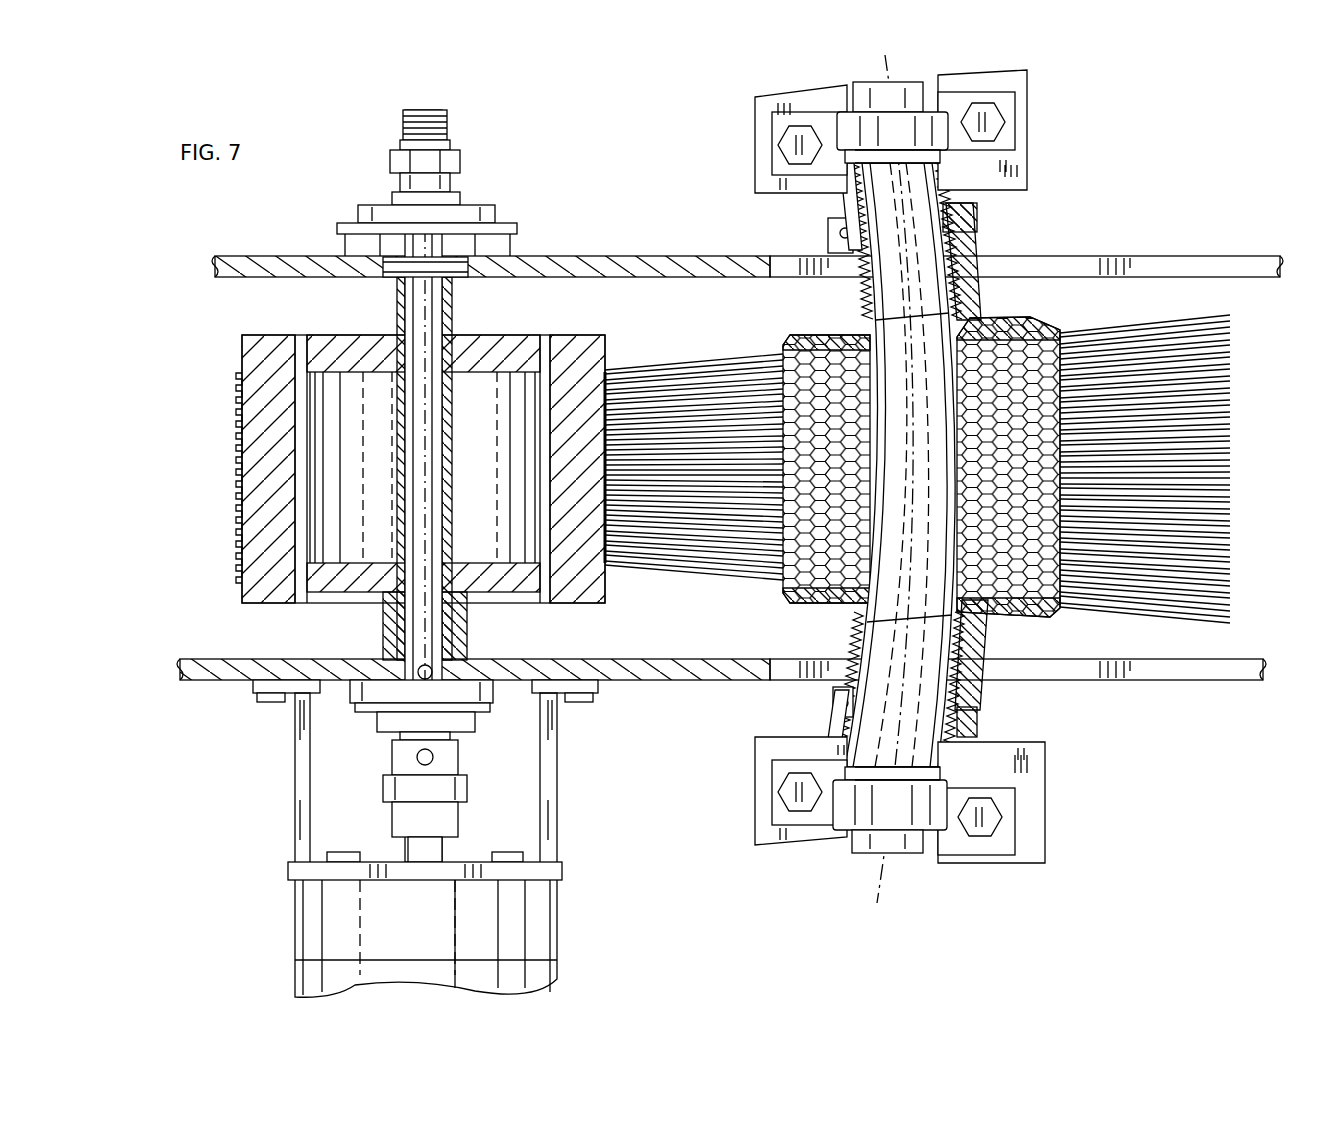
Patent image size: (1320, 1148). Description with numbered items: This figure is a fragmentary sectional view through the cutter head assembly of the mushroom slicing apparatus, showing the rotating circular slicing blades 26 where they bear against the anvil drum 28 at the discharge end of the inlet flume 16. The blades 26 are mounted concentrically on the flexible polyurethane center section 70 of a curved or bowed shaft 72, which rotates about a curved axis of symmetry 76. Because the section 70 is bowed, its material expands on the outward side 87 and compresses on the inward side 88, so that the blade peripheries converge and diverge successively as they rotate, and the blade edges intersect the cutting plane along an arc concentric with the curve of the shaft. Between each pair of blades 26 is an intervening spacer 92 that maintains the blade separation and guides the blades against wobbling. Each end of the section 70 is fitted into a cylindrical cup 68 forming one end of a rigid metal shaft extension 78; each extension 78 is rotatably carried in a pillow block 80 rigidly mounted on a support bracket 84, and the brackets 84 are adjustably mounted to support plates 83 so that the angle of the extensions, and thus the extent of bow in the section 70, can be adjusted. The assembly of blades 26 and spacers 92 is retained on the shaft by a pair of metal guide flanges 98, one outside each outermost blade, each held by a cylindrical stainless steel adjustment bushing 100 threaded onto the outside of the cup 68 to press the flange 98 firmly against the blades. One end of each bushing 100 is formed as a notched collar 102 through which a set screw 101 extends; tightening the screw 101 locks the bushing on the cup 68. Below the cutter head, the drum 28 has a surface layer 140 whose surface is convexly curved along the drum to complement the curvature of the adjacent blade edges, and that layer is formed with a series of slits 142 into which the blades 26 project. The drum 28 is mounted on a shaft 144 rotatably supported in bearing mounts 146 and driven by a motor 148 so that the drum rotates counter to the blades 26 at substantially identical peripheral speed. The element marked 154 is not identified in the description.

The inlet flume 16 is at (262, 256).
The circular slicing blades 26 is at (1230, 579).
The anvil drum 28 is at (608, 602).
The cylindrical cup 68 is at (850, 198).
The shaft center section 70 is at (940, 612).
The bowed shaft 72 is at (860, 85).
The curved axis of symmetry 76 is at (879, 880).
The shaft extension 78 is at (948, 157).
The pillow block 80 is at (760, 128).
The support plate 83 is at (1015, 167).
The support bracket 84 is at (985, 80).
The outward side 87 is at (955, 300).
The inward side 88 is at (870, 297).
The spacer 92 is at (1066, 328).
The guide flange 98 is at (1030, 323).
The adjustment bushing 100 is at (975, 240).
The set screw 101 is at (840, 235).
The notched collar 102 is at (980, 208).
The surface layer 140 is at (578, 603).
The slits 142 is at (238, 384).
The drum shaft 144 is at (430, 297).
The bearing mounts 146 is at (515, 246).
The motor 148 is at (545, 952).
The drum face 154 is at (606, 368).